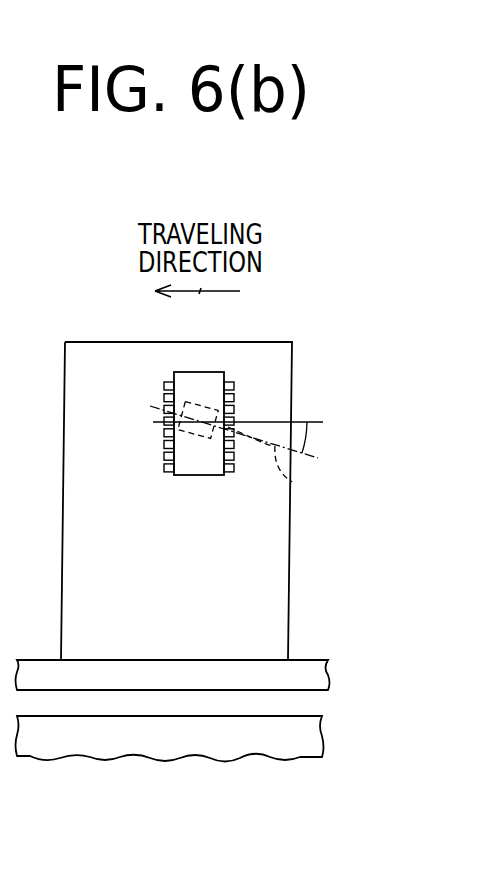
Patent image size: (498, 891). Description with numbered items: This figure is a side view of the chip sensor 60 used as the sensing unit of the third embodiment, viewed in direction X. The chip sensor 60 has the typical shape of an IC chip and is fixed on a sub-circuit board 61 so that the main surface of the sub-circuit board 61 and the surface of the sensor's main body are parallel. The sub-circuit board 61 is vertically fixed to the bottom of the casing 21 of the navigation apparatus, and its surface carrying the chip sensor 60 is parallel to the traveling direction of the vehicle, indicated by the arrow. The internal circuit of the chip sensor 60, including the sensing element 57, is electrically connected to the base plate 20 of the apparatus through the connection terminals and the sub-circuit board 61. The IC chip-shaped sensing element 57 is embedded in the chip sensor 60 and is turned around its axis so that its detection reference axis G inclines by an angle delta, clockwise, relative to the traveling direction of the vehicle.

The base plate 20 is at (320, 678).
The casing 21 is at (307, 738).
The sensing element 57 is at (202, 440).
The chip sensor 60 is at (220, 377).
The sub-circuit board 61 is at (293, 382).
The detection reference axis G is at (292, 482).